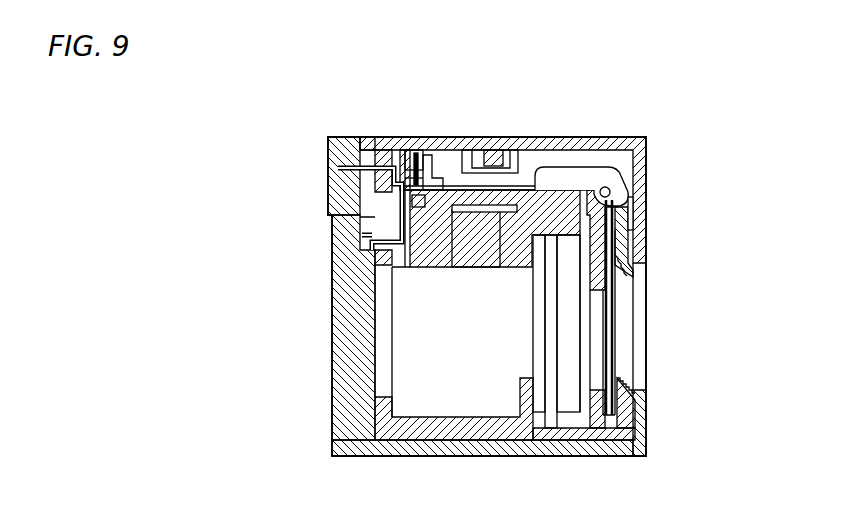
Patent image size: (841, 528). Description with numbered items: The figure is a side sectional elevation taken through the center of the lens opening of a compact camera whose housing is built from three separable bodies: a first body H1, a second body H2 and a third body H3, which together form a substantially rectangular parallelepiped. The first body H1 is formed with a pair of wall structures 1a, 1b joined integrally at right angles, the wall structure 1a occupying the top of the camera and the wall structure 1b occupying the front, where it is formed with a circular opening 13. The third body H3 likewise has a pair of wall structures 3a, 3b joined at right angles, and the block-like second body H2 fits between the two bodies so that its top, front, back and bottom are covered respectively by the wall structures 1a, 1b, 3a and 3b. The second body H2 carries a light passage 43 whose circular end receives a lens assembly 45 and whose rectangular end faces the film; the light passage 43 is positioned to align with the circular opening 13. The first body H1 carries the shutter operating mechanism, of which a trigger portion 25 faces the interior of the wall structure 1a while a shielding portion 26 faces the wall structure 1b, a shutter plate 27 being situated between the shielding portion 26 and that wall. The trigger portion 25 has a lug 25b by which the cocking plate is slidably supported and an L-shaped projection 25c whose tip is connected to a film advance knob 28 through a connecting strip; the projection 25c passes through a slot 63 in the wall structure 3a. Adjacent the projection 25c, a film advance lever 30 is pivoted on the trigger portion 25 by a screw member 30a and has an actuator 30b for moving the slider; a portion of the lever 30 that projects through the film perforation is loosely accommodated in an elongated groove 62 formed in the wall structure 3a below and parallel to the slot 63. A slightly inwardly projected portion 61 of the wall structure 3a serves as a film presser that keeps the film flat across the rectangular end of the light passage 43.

The wall structure 1a is at (568, 140).
The wall structure 1b is at (636, 418).
The wall structure 3a is at (345, 358).
The wall structure 3b is at (406, 440).
The circular opening 13 is at (633, 350).
The trigger portion 25 is at (524, 188).
The lug 25b is at (600, 177).
The projection 25c is at (390, 150).
The shielding portion 26 is at (608, 282).
The shutter plate 27 is at (612, 302).
The film advance knob 28 is at (335, 152).
The film advance lever 30 is at (370, 243).
The screw member 30a is at (419, 198).
The actuator 30b is at (450, 178).
The light passage 43 is at (497, 397).
The lens assembly 45 is at (570, 402).
The projected portion 61 is at (375, 363).
The elongated groove 62 is at (385, 258).
The slot 63 is at (372, 137).
The first body H1 is at (640, 204).
The second body H2 is at (452, 430).
The third body H3 is at (346, 306).